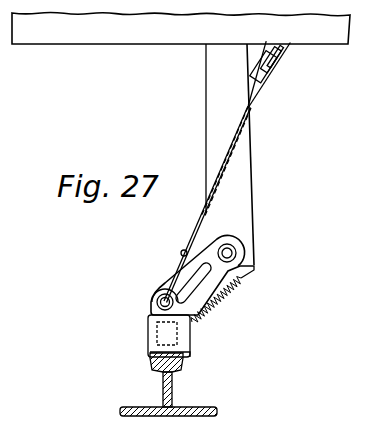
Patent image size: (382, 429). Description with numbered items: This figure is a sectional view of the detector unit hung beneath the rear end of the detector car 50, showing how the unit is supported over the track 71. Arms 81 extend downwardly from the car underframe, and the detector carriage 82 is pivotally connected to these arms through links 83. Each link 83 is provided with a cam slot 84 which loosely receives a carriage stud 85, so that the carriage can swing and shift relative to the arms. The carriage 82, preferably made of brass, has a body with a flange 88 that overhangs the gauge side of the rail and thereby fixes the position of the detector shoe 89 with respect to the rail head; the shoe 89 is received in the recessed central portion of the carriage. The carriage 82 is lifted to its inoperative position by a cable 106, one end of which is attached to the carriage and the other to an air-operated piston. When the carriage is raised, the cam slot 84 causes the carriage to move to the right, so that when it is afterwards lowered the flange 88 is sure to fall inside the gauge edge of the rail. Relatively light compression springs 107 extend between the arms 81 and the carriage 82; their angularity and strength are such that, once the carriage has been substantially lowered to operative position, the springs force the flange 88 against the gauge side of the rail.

The detector car 50 is at (93, 33).
The arms 81 is at (251, 163).
The detector carriage 82 is at (147, 330).
The links 83 is at (203, 255).
The cam slot 84 is at (192, 288).
The carriage studs 85 is at (152, 302).
The flange 88 is at (193, 357).
The detector shoe 89 is at (153, 342).
The track 71 is at (173, 385).
The cable 106 is at (205, 204).
The compression springs 107 is at (218, 306).